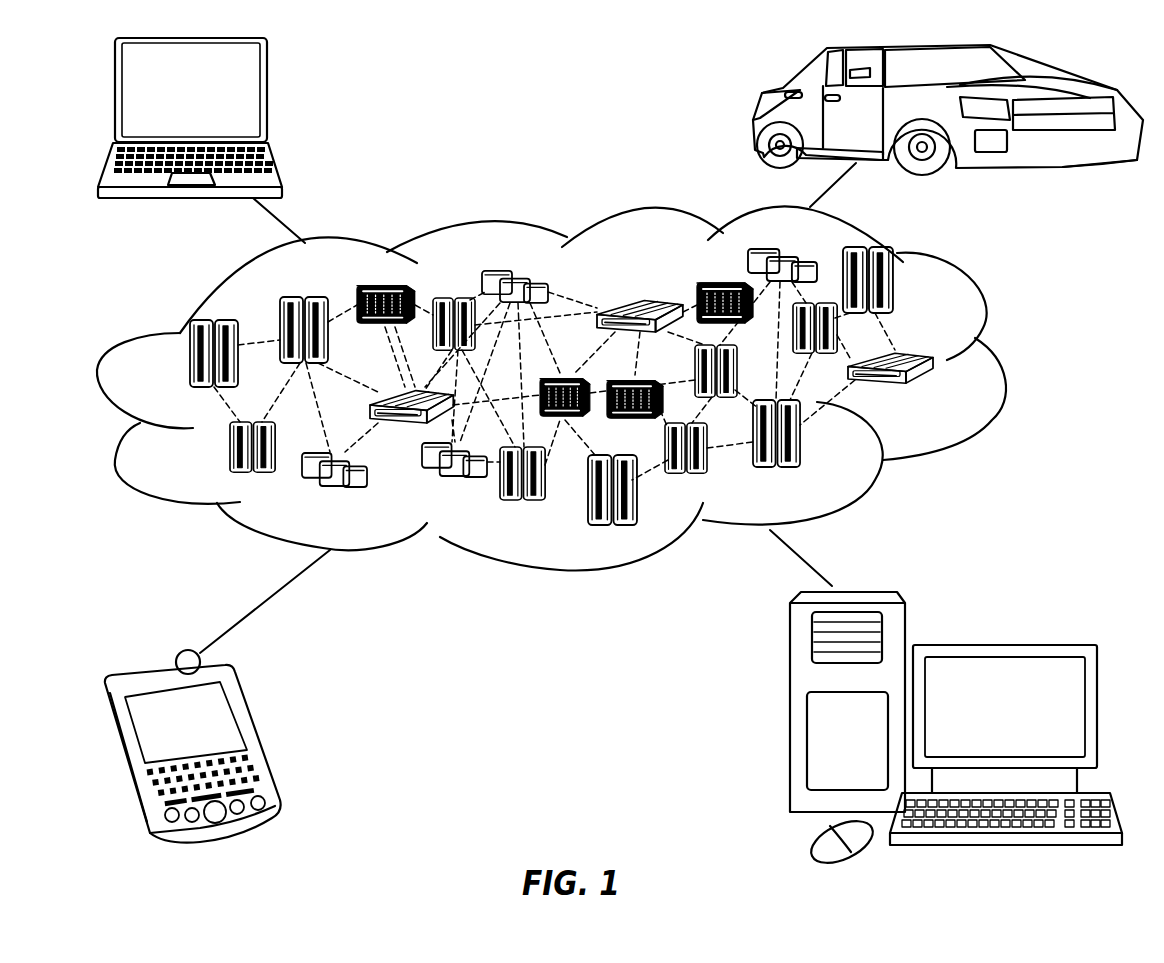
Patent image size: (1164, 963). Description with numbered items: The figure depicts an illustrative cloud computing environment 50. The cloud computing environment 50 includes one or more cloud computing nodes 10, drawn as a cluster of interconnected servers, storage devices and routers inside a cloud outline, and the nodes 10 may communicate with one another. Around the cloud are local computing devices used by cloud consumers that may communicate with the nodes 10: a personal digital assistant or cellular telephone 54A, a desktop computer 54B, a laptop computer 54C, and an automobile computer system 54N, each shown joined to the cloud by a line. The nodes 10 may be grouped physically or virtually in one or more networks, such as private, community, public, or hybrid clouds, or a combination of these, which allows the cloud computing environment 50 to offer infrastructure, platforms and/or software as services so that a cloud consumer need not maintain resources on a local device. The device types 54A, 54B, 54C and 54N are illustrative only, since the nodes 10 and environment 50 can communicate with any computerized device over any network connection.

The cloud computing node 10 is at (937, 392).
The cloud computing environment 50 is at (1003, 362).
The personal digital assistant or cellular telephone 54A is at (253, 737).
The desktop computer 54B is at (1000, 643).
The laptop computer 54C is at (267, 97).
The automobile computer system 54N is at (755, 112).